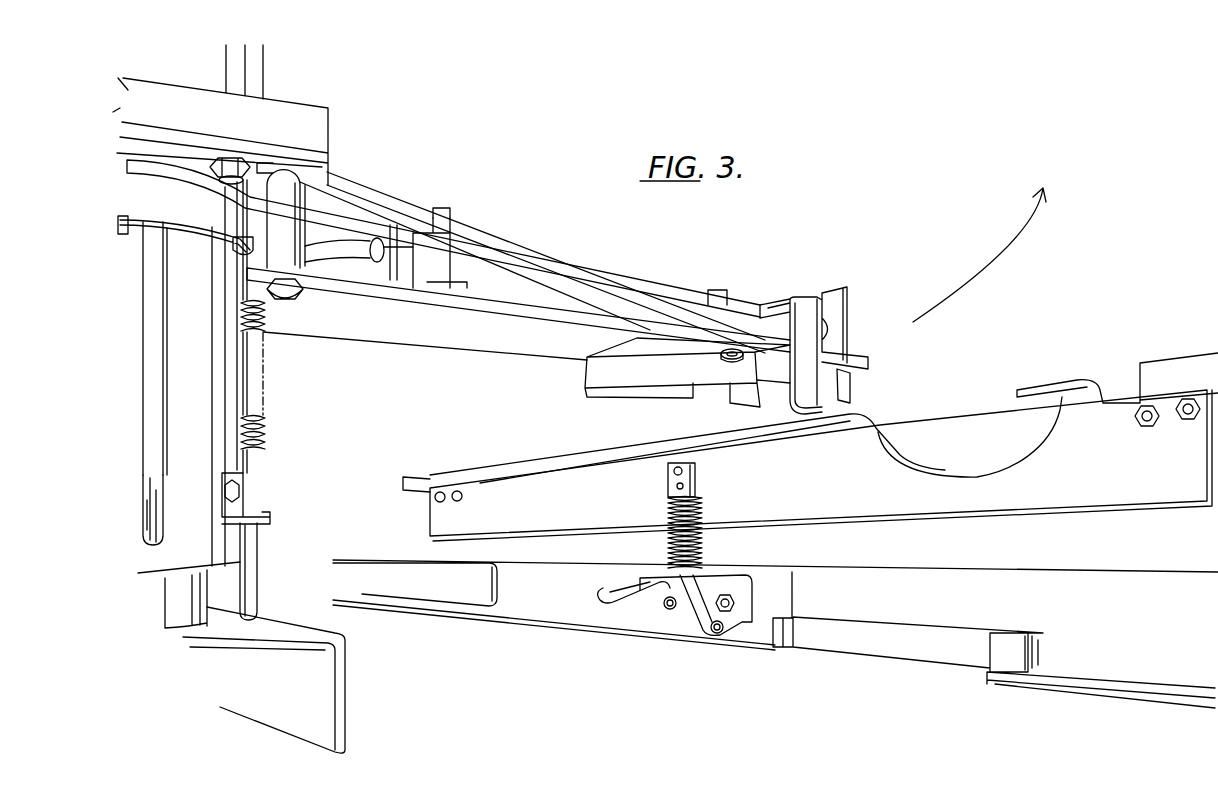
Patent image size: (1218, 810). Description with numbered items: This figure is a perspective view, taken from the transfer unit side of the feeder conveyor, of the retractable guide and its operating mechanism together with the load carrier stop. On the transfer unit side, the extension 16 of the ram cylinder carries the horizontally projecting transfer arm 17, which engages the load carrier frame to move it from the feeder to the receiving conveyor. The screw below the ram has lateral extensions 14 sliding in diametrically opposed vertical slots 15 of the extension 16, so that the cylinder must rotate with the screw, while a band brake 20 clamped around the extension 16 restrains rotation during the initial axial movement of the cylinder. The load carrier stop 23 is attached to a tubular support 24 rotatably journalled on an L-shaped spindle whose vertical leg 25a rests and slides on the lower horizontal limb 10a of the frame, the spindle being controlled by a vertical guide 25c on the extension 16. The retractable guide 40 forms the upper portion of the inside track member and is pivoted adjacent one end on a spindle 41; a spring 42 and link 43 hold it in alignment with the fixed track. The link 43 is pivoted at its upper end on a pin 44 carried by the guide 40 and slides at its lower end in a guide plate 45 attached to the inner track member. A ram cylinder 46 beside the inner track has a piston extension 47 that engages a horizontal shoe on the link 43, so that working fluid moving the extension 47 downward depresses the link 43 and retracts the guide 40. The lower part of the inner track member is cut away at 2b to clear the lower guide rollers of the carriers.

The cut-away region of inner track member 2b is at (845, 637).
The lower horizontal limb of frame 10a is at (384, 671).
The lateral extensions of screw 14 is at (150, 498).
The vertical slots 15 is at (150, 385).
The extension of ram cylinder 16 is at (160, 560).
The transfer arm 17 is at (440, 343).
The band brake 20 is at (188, 213).
The load carrier stop 23 is at (810, 315).
The tubular support 24 is at (673, 300).
The vertical leg of spindle 25a is at (300, 566).
The vertical guide on ram extension 25c is at (306, 500).
The retractable guide 40 is at (943, 490).
The spindle 41 is at (460, 483).
The spring 42 is at (667, 537).
The link 43 is at (670, 486).
The pin 44 is at (670, 475).
The guide plate 45 is at (632, 590).
The ram cylinder 46 is at (786, 607).
The extension of piston 47 is at (722, 633).